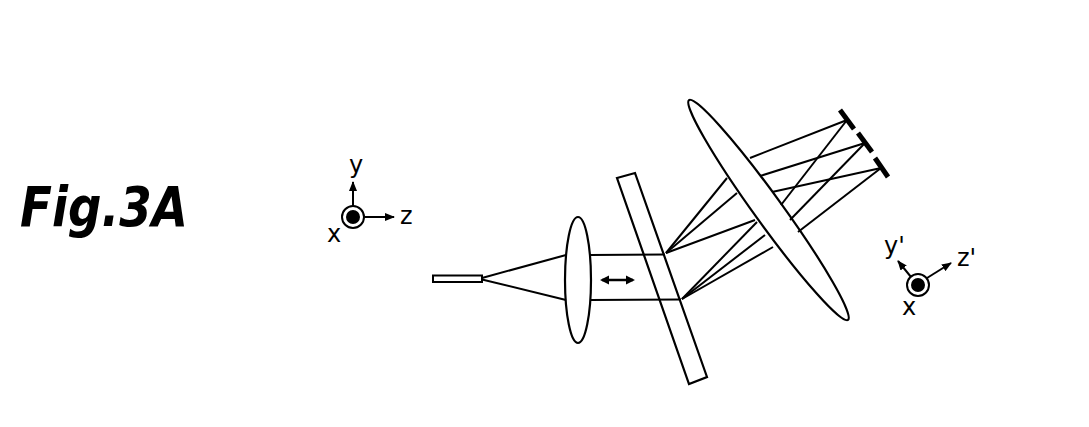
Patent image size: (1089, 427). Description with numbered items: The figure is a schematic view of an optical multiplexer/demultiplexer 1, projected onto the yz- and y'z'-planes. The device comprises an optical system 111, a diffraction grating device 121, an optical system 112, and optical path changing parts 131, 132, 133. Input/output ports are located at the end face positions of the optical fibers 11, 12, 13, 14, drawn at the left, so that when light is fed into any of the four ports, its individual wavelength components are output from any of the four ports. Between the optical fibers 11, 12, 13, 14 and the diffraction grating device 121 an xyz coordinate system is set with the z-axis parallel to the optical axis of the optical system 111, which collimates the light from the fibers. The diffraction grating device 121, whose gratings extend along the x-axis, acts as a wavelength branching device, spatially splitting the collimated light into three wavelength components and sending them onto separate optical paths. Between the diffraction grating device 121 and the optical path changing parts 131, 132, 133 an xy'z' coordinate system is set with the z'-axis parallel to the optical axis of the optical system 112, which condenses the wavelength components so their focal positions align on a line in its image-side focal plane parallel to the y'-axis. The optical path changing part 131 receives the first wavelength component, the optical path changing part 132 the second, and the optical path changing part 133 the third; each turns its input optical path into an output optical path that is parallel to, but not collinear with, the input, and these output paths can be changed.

The optical multiplexer/demultiplexer 1 is at (478, 124).
The optical fiber 11 is at (449, 314).
The optical fiber 12 is at (449, 314).
The optical fiber 13 is at (449, 314).
The optical fiber 14 is at (447, 283).
The optical system 111 is at (582, 217).
The optical system 112 is at (691, 98).
The diffraction grating device 121 is at (632, 172).
The optical path changing part 131 is at (888, 176).
The optical path changing part 132 is at (871, 148).
The optical path changing part 133 is at (853, 125).